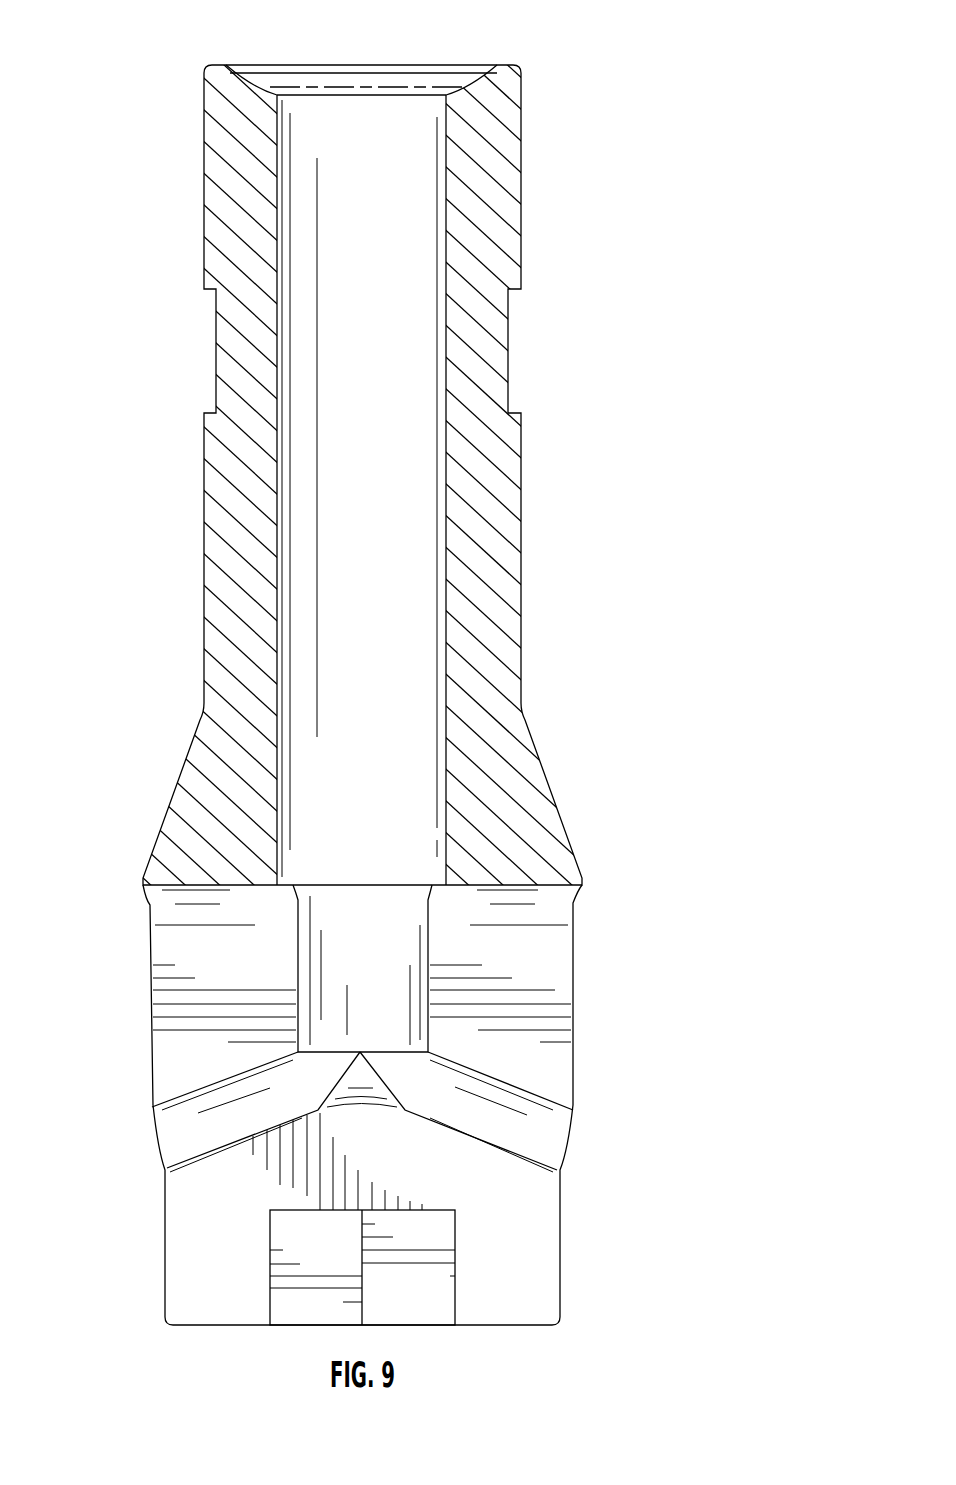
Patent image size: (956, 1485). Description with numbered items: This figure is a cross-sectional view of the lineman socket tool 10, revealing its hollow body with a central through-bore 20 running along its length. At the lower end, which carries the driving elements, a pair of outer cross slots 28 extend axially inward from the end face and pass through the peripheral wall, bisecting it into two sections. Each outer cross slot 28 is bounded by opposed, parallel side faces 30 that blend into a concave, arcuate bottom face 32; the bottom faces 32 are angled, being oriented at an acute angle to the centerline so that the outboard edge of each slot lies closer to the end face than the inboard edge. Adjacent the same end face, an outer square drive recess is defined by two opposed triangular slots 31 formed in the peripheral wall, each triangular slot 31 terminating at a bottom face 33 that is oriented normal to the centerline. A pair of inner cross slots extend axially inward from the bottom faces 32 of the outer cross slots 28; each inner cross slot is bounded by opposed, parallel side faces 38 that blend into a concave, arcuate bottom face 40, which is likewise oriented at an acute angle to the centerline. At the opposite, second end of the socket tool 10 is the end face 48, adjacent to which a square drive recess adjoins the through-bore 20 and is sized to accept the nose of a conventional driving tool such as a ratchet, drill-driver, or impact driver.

The socket tool 10 is at (586, 193).
The central through-bore 20 is at (443, 128).
The outer cross slots 28 is at (552, 1245).
The side faces 30 is at (234, 1215).
The triangular slots 31 is at (302, 1313).
The bottom face 32 is at (190, 1133).
The bottom face 33 is at (307, 1210).
The side faces 38 is at (556, 1020).
The bottom face 40 is at (538, 884).
The end face 48 is at (247, 56).